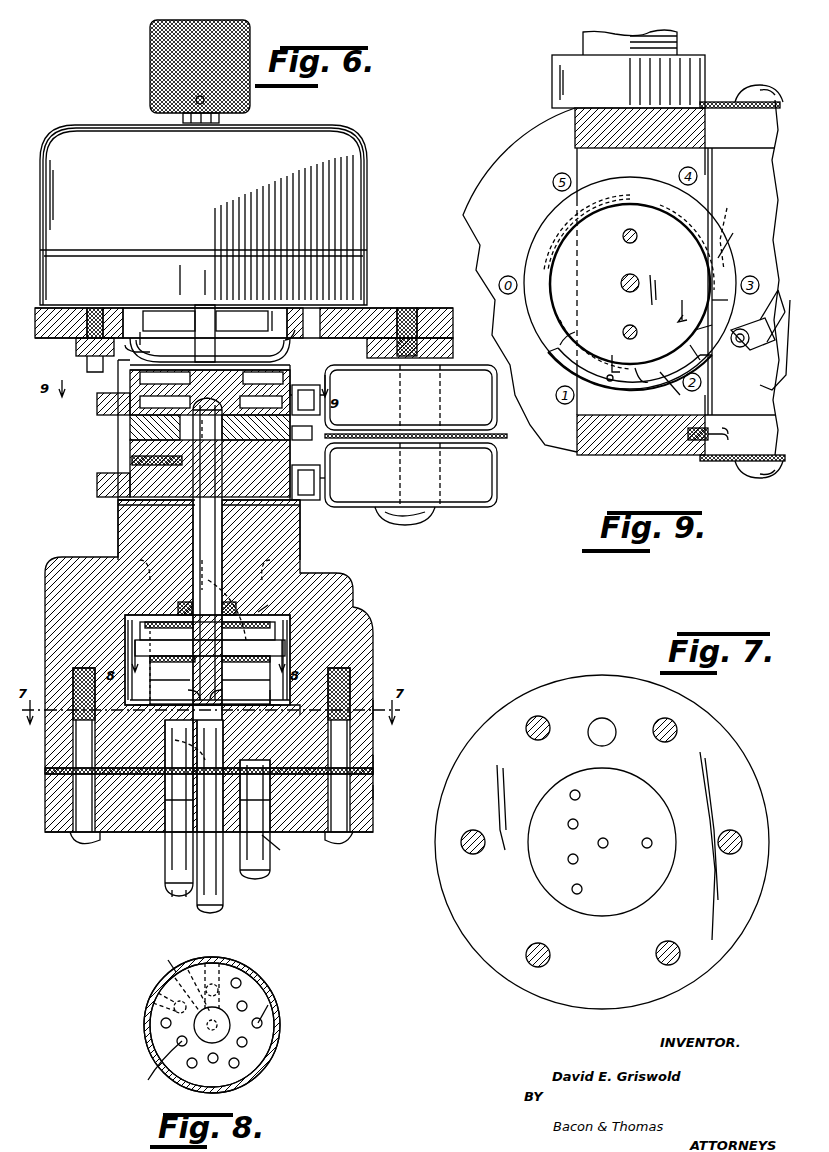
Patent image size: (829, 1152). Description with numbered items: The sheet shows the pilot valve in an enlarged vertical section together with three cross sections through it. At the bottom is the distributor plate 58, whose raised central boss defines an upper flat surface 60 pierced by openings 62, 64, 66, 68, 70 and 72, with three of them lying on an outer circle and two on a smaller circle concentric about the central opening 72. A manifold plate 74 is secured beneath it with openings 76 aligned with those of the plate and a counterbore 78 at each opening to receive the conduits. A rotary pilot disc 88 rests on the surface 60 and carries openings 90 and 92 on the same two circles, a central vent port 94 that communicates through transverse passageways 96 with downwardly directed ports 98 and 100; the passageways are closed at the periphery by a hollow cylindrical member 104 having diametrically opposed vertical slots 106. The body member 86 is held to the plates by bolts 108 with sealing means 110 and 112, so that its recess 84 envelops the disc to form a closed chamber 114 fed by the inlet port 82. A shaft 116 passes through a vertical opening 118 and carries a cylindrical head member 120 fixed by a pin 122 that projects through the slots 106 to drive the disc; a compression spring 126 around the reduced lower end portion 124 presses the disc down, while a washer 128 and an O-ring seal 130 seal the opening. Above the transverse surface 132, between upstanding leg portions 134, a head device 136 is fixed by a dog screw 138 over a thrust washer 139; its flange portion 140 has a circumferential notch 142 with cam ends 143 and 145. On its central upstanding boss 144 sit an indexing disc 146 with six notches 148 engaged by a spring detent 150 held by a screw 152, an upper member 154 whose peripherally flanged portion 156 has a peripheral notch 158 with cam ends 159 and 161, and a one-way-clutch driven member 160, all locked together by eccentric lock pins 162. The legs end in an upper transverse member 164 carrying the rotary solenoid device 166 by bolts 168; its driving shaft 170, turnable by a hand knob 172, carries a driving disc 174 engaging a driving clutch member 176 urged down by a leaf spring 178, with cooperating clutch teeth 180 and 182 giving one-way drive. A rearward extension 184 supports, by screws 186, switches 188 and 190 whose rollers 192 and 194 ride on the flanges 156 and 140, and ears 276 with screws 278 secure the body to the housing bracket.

In FIG. 6, the distributor plate 58 is at (373, 748).
In FIG. 7, the distributor plate 58 is at (585, 680).
In FIG. 6, the upper flat surface 60 is at (288, 700).
In FIG. 7, the upper flat surface 60 is at (622, 775).
In FIG. 7, the opening 62 is at (650, 840).
In FIG. 7, the opening 64 is at (580, 886).
In FIG. 7, the opening 66 is at (568, 860).
In FIG. 7, the opening 68 is at (575, 820).
In FIG. 7, the opening 70 is at (580, 792).
In FIG. 6, the central opening 72 is at (190, 752).
In FIG. 7, the central opening 72 is at (604, 838).
In FIG. 6, the manifold plate 74 is at (373, 790).
In FIG. 6, the openings 76 is at (213, 795).
In FIG. 6, the counterbore 78 is at (281, 845).
In FIG. 6, the inlet port 82 is at (210, 678).
In FIG. 6, the recess 84 is at (282, 626).
In FIG. 6, the body member 86 is at (82, 568).
In FIG. 9, the body member 86 is at (536, 138).
In FIG. 6, the rotary pilot disc 88 is at (255, 716).
In FIG. 8, the rotary pilot disc 88 is at (275, 1044).
In FIG. 8, the openings 90 is at (240, 982).
In FIG. 8, the openings 92 is at (160, 1078).
In FIG. 6, the vent port 94 is at (165, 718).
In FIG. 8, the vent port 94 is at (201, 1025).
In FIG. 6, the transverse passageways 96 is at (223, 716).
In FIG. 8, the transverse passageways 96 is at (205, 963).
In FIG. 8, the port 98 is at (153, 998).
In FIG. 8, the port 100 is at (175, 966).
In FIG. 6, the hollow cylindrical member 104 is at (128, 676).
In FIG. 8, the hollow cylindrical member 104 is at (268, 1005).
In FIG. 6, the vertical slots 106 is at (128, 633).
In FIG. 6, the bolts 108 is at (80, 845).
In FIG. 7, the bolts 108 is at (543, 716).
In FIG. 6, the sealing means 110 is at (373, 766).
In FIG. 6, the sealing means 112 is at (373, 702).
In FIG. 6, the closed chamber 114 is at (262, 610).
In FIG. 6, the shaft 116 is at (200, 532).
In FIG. 6, the vertical opening 118 is at (195, 545).
In FIG. 6, the cylindrical head member 120 is at (152, 618).
In FIG. 6, the pin 122 is at (128, 620).
In FIG. 6, the reduced lower end portion 124 is at (198, 600).
In FIG. 6, the compression spring 126 is at (218, 666).
In FIG. 6, the washer 128 is at (241, 601).
In FIG. 6, the O-ring seal 130 is at (229, 606).
In FIG. 6, the transverse surface 132 is at (118, 505).
In FIG. 6, the leg portions 134 is at (118, 450).
In FIG. 9, the leg portions 134 is at (640, 120).
In FIG. 6, the head device 136 is at (210, 468).
In FIG. 9, the head device 136 is at (648, 385).
In FIG. 6, the dog screw 138 is at (132, 461).
In FIG. 6, the washer 139 is at (261, 530).
In FIG. 6, the flange portion 140 is at (97, 480).
In FIG. 9, the circumferential notch 142 is at (740, 240).
In FIG. 9, the notch end 143 is at (733, 233).
In FIG. 6, the central upstanding boss 144 is at (165, 402).
In FIG. 9, the notch end 145 is at (674, 348).
In FIG. 6, the indexing disc 146 is at (130, 425).
In FIG. 9, the notches 148 is at (625, 194).
In FIG. 6, the spring detent 150 is at (298, 440).
In FIG. 9, the spring detent 150 is at (714, 380).
In FIG. 9, the screw 152 is at (728, 435).
In FIG. 6, the upper member 154 is at (130, 393).
In FIG. 9, the upper member 154 is at (606, 274).
In FIG. 6, the peripherally flanged portion 156 is at (97, 402).
In FIG. 9, the peripherally flanged portion 156 is at (575, 338).
In FIG. 9, the peripheral notch 158 is at (624, 356).
In FIG. 9, the cam end 159 is at (605, 380).
In FIG. 6, the one-way-clutch driven member 160 is at (263, 378).
In FIG. 9, the cam end 161 is at (688, 327).
In FIG. 6, the eccentric lock pins 162 is at (256, 417).
In FIG. 9, the eccentric lock pins 162 is at (637, 237).
In FIG. 6, the upper transverse member 164 is at (35, 322).
In FIG. 6, the rotary solenoid device 166 is at (362, 158).
In FIG. 6, the bolts 168 is at (95, 308).
In FIG. 6, the driving shaft 170 is at (210, 306).
In FIG. 6, the hand knob 172 is at (150, 50).
In FIG. 6, the driving disc 174 is at (244, 321).
In FIG. 6, the driving clutch member 176 is at (141, 308).
In FIG. 6, the leaf spring 178 is at (165, 310).
In FIG. 6, the clutch teeth 180 is at (205, 323).
In FIG. 6, the clutch teeth 182 is at (165, 378).
In FIG. 6, the rearward extension 184 is at (446, 308).
In FIG. 6, the screws 186 is at (410, 308).
In FIG. 6, the switch 188 is at (472, 372).
In FIG. 9, the switch 188 is at (765, 380).
In FIG. 6, the switch 190 is at (497, 470).
In FIG. 6, the roller 192 is at (322, 405).
In FIG. 9, the roller 192 is at (714, 360).
In FIG. 6, the roller 194 is at (322, 480).
In FIG. 9, the roller 194 is at (742, 328).
In FIG. 9, the ears 276 is at (718, 102).
In FIG. 9, the screws 278 is at (752, 92).